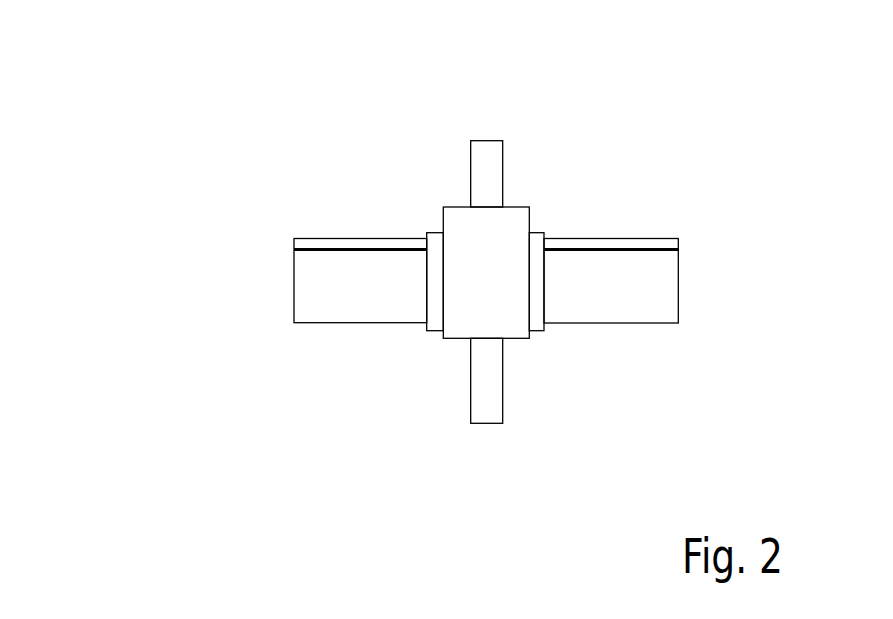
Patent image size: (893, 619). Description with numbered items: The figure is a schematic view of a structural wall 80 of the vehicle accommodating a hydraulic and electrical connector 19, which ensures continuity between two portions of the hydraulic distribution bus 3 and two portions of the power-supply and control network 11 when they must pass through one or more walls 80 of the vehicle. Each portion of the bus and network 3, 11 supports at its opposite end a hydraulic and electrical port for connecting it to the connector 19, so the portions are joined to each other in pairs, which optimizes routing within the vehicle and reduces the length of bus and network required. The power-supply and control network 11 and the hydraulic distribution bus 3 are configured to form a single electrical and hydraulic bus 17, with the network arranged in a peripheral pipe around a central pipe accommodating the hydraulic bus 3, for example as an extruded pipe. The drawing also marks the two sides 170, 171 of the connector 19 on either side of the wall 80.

The electrical and hydraulic bus 17 is at (137, 80).
The hydraulic and electrical connector 19 is at (445, 197).
The hydraulic distribution bus 3 is at (294, 285).
The power-supply and control network 11 is at (294, 245).
The wall 80 is at (486, 423).
The first side 170 is at (330, 358).
The second side 171 is at (648, 355).